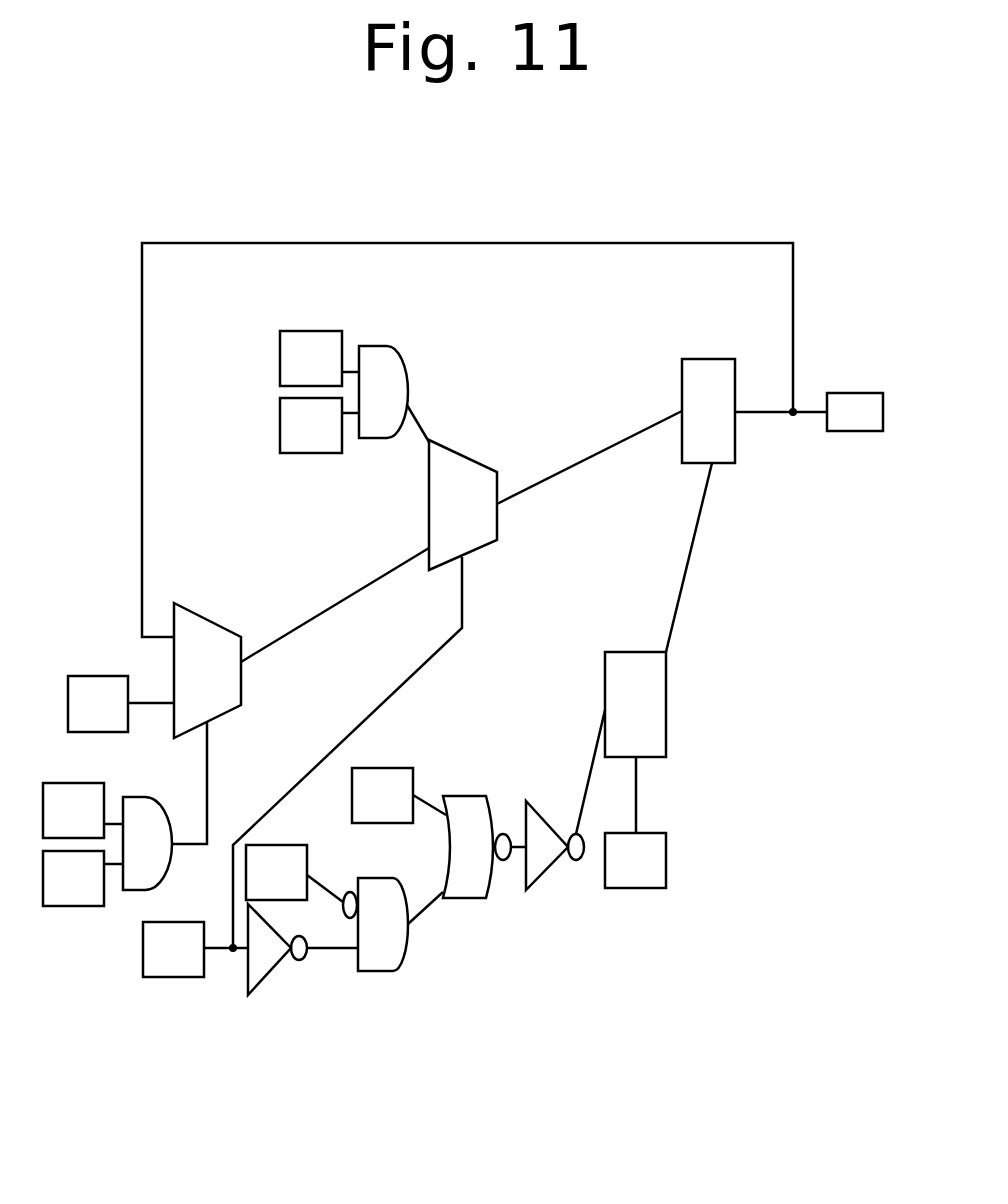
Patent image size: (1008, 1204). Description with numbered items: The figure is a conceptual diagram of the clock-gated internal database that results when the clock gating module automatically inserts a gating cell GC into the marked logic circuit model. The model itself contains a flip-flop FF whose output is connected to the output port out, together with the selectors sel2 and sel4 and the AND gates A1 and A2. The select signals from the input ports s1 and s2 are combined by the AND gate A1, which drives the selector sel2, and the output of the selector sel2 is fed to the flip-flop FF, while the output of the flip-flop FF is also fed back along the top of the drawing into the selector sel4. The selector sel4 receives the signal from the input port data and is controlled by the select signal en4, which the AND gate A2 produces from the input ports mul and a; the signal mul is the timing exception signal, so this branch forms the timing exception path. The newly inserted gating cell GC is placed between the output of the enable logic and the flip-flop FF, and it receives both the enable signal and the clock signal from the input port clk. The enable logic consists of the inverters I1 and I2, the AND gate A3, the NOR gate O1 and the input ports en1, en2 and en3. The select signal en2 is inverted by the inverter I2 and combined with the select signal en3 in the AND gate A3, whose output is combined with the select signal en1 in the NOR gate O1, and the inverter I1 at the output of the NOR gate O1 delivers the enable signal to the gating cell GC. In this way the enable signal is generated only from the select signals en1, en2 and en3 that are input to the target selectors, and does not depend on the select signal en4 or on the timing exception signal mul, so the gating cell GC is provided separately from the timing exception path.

The input port s1 is at (319, 358).
The input port s2 is at (319, 425).
The AND gate A1 is at (394, 394).
The selector sel2 is at (555, 490).
The flip-flop FF is at (746, 505).
The output port out is at (855, 412).
The gating cell GC is at (621, 743).
The input port clk is at (635, 860).
The selector sel4 is at (301, 643).
The input port data is at (121, 704).
The select signal en4 is at (214, 783).
The input port mul is at (83, 810).
The input port a is at (83, 878).
The AND gate A2 is at (147, 843).
The input port en2 is at (323, 767).
The inverter I2 is at (303, 949).
The input port en3 is at (294, 873).
The AND gate A3 is at (393, 924).
The input port en1 is at (399, 795).
The NOR gate O1 is at (484, 847).
The inverter I1 is at (555, 845).